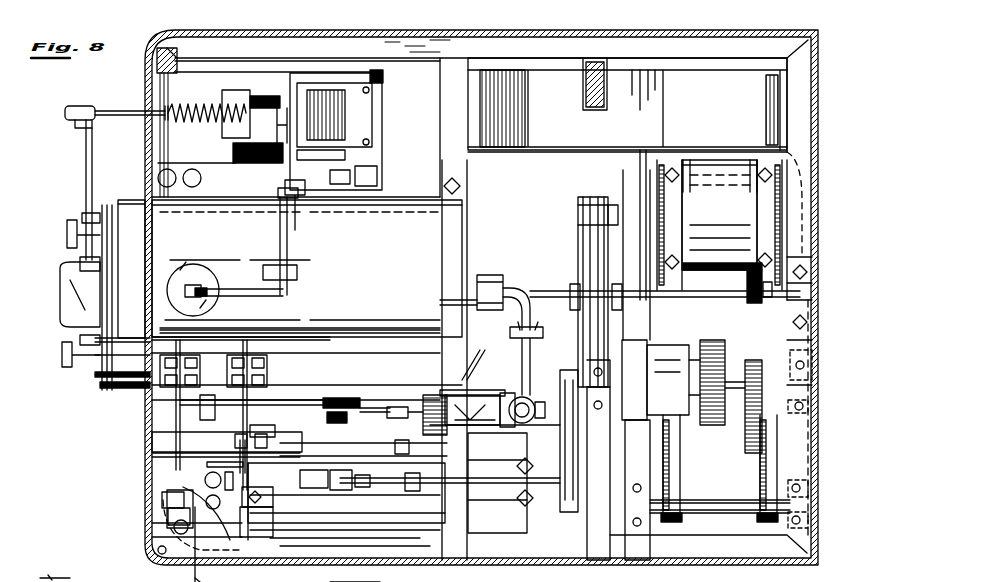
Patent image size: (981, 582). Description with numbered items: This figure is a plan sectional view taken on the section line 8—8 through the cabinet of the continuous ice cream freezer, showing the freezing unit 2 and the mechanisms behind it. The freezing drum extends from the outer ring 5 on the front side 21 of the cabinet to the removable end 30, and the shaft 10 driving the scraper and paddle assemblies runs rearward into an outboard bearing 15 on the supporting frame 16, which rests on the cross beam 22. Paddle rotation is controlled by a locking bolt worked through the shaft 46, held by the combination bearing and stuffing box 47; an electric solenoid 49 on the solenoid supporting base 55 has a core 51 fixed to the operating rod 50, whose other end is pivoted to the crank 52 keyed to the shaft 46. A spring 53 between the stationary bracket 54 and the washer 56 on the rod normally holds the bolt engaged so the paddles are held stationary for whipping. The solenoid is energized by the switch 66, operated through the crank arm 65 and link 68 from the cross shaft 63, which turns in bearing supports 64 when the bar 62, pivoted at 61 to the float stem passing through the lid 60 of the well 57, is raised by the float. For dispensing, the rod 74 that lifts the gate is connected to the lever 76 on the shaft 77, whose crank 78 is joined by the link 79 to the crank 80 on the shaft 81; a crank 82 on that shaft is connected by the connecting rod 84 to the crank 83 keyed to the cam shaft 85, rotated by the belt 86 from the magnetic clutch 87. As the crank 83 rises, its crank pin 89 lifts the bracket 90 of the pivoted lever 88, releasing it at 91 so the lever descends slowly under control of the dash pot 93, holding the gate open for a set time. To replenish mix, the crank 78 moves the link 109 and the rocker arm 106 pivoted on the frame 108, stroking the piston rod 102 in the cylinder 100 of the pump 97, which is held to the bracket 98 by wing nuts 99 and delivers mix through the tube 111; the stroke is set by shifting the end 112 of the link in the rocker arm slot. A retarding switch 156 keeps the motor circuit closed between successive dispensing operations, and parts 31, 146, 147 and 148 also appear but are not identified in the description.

The freezing unit 2 is at (392, 243).
The outer ring 5 is at (122, 295).
The section line 8 is at (355, 577).
The shaft 10 is at (568, 300).
The outboard bearing 15 is at (495, 278).
The supporting frame 16 is at (468, 190).
The front side 21 is at (146, 140).
The cross beam 22 is at (468, 122).
The removable end 30 is at (100, 360).
The support 31 is at (207, 576).
The shaft 46 is at (86, 146).
The combination bearing and stuffing box 47 is at (80, 262).
The electric solenoid 49 is at (360, 125).
The operating rod 50 is at (125, 112).
The core 51 is at (265, 104).
The crank 52 is at (85, 102).
The spring 53 is at (204, 108).
The stationary bracket 54 is at (236, 114).
The solenoid supporting base 55 is at (382, 92).
The washer 56 is at (170, 108).
The well 57 is at (205, 272).
The lid 60 is at (210, 285).
The pivotal connection 61 is at (186, 286).
The bar 62 is at (255, 298).
The cross shaft 63 is at (288, 240).
The bearing supports 64 is at (280, 200).
The crank arm 65 is at (380, 170).
The switch 66 is at (350, 156).
The link 68 is at (310, 196).
The rod 74 is at (62, 360).
The lever 76 is at (123, 337).
The shaft 77 is at (152, 400).
The crank 78 is at (152, 445).
The link 79 is at (227, 442).
The crank 80 is at (273, 433).
The shaft 81 is at (280, 352).
The crank 82 is at (207, 465).
The crank 83 is at (256, 501).
The connecting rod 84 is at (205, 482).
The cam shaft 85 is at (440, 485).
The belt 86 is at (560, 420).
The magnetic clutch 87 is at (708, 450).
The lever 88 is at (400, 525).
The crank pin 89 is at (160, 505).
The bracket 90 is at (167, 520).
The disengagement point 91 is at (55, 573).
The dash pot 93 is at (216, 534).
The pump 97 is at (480, 395).
The bracket 98 is at (479, 365).
The wing nuts 99 is at (435, 455).
The cylinder 100 is at (472, 428).
The piston rod 102 is at (417, 417).
The rocker arm 106 is at (403, 405).
The frame 108 is at (310, 375).
The link 109 is at (280, 408).
The tube 111 is at (462, 296).
The end of link 112 is at (335, 423).
The gear 146 is at (352, 485).
The coupling 147 is at (350, 492).
The bracket 148 is at (410, 492).
The retarding switch 156 is at (290, 505).